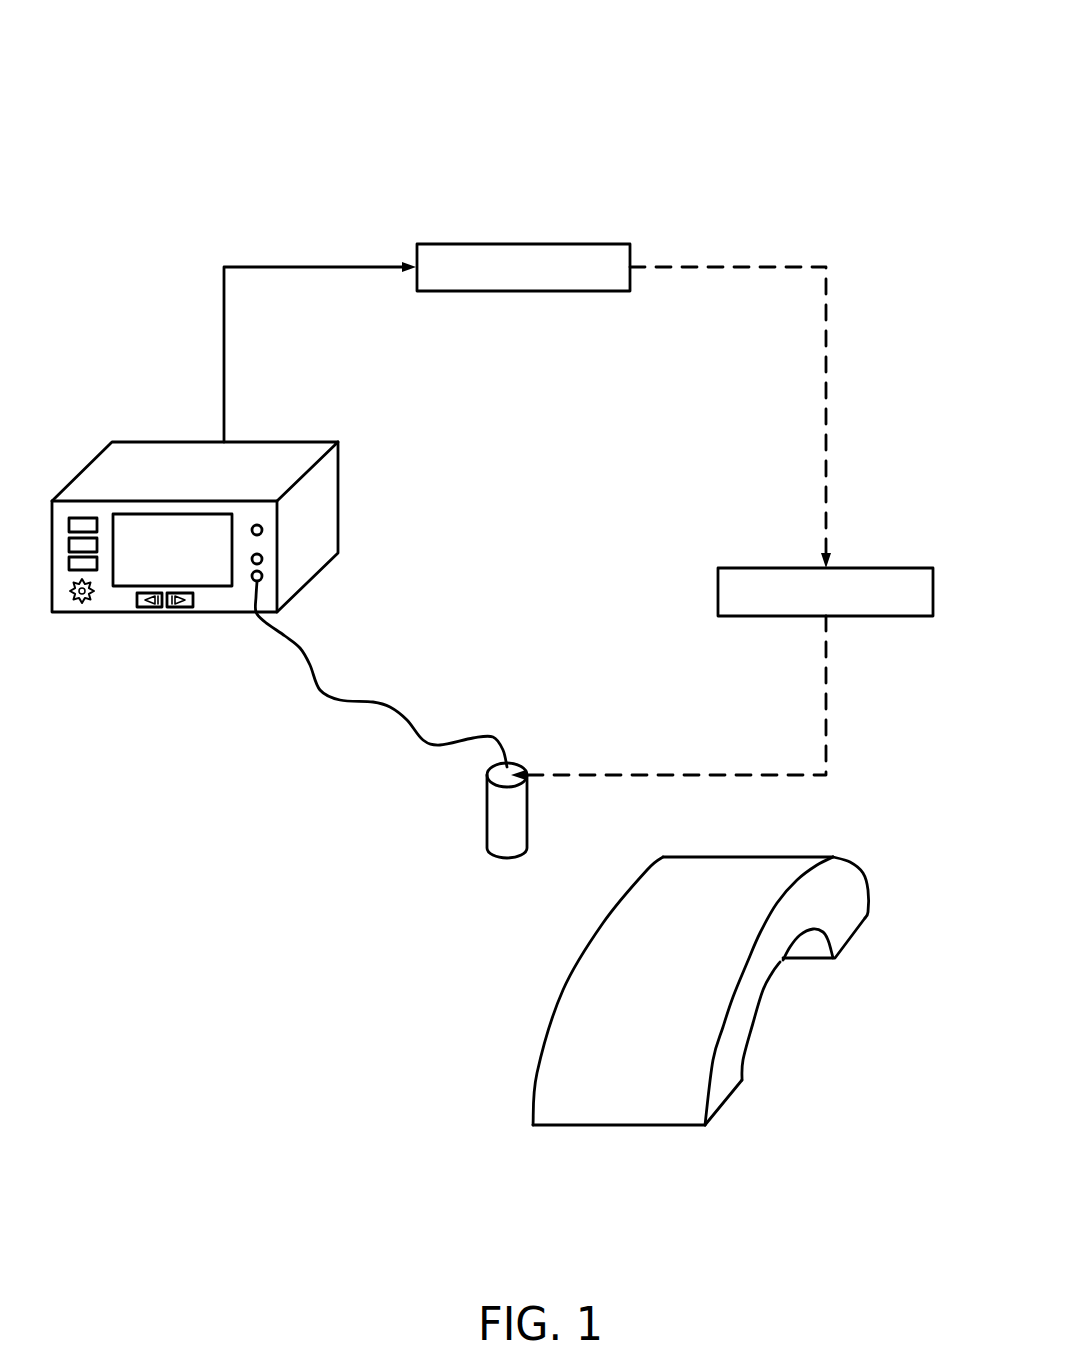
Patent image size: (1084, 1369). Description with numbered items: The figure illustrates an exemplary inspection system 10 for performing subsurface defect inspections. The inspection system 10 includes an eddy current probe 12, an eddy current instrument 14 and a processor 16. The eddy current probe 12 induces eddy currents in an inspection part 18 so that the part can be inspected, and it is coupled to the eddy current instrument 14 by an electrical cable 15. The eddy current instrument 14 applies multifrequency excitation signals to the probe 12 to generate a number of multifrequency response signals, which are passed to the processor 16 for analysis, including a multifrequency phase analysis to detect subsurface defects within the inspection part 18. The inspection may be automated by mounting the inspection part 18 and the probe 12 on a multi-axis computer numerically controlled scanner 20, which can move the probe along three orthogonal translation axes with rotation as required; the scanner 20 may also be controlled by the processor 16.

The inspection system 10 is at (802, 60).
The eddy current probe 12 is at (487, 827).
The eddy current instrument 14 is at (340, 496).
The electrical cable 15 is at (384, 705).
The processor 16 is at (523, 244).
The inspection part 18 is at (843, 923).
The scanner 20 is at (884, 568).